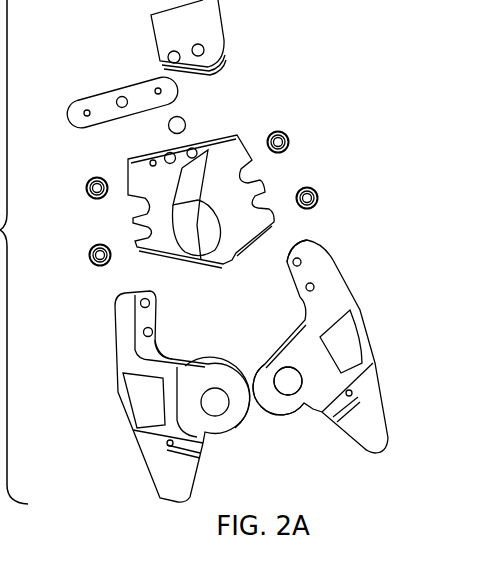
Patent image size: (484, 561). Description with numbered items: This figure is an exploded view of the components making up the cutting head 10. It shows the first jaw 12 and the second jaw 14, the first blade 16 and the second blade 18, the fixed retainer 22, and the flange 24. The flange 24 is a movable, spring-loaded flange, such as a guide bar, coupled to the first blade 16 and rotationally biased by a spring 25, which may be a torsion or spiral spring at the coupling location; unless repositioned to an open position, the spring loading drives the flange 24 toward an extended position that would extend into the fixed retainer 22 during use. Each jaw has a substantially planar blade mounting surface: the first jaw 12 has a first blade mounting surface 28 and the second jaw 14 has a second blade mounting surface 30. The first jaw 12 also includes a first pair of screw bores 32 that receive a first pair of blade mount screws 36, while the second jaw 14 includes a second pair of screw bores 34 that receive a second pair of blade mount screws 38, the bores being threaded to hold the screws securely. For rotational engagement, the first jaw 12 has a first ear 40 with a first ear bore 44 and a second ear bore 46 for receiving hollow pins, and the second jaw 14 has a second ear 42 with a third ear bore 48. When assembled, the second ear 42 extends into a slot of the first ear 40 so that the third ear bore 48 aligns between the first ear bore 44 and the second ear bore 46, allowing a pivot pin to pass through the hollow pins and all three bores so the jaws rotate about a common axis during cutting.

The cutting head 10 is at (290, 66).
The first jaw 12 is at (321, 344).
The second jaw 14 is at (165, 395).
The first blade 16 is at (185, 185).
The second blade 18 is at (128, 161).
The fixed retainer 22 is at (209, 24).
The flange 24 is at (103, 100).
The spring 25 is at (185, 118).
The first blade mounting surface 28 is at (300, 298).
The second blade mounting surface 30 is at (162, 348).
The first pair of screw bores 32 is at (300, 262).
The second pair of screw bores 34 is at (157, 342).
The first pair of blade mount screws 36 is at (288, 146).
The second pair of blade mount screws 38 is at (88, 192).
The first ear 40 is at (275, 358).
The second ear 42 is at (217, 377).
The first ear bore 44 is at (290, 386).
The second ear bore 46 is at (292, 386).
The third ear bore 48 is at (218, 407).